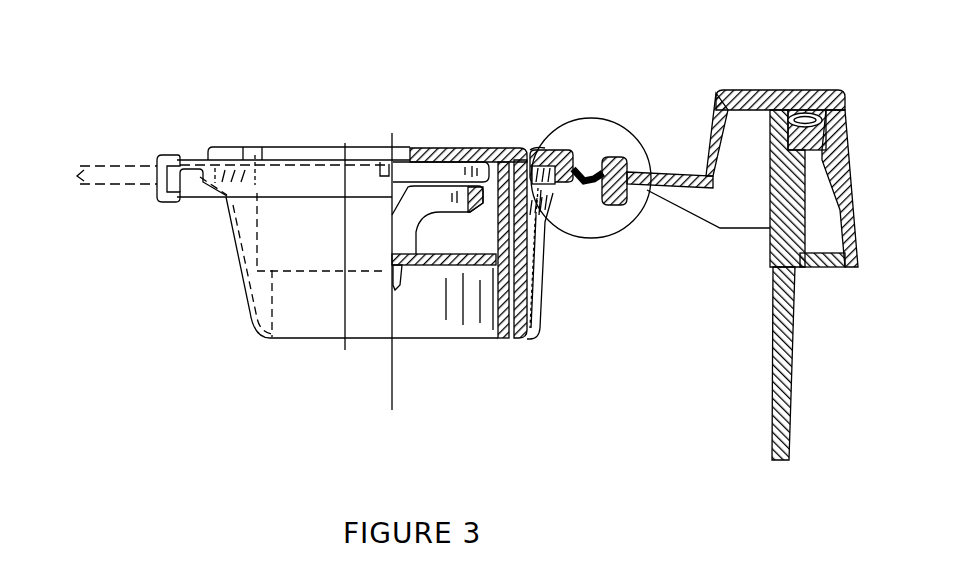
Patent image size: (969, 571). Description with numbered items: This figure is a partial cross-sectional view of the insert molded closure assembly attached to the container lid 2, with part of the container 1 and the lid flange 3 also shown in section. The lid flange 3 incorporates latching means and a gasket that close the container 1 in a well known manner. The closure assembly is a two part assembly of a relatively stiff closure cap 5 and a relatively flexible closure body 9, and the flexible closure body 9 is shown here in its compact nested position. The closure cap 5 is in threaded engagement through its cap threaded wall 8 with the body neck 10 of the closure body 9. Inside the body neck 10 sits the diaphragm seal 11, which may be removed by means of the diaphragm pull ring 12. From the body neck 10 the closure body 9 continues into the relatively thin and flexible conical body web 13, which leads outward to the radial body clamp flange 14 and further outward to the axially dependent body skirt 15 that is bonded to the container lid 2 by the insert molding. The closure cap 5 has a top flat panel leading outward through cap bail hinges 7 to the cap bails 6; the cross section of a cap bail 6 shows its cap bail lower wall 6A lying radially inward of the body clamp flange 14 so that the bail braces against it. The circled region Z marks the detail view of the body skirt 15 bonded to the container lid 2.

The container 1 is at (807, 395).
The container lid 2 is at (123, 172).
The lid flange 3 is at (808, 90).
The closure cap 5 is at (447, 148).
The cap bail 6 is at (555, 149).
The cap bail lower wall 6A is at (525, 148).
The cap bail hinge 7 is at (373, 147).
The cap threaded wall 8 is at (548, 228).
The closure body 9 is at (197, 287).
The body neck 10 is at (503, 272).
The diaphragm seal 11 is at (426, 266).
The diaphragm pull ring 12 is at (440, 203).
The conical body web 13 is at (533, 272).
The body clamp flange 14 is at (590, 163).
The body skirt 15 is at (623, 162).
The detail view Z is at (632, 225).